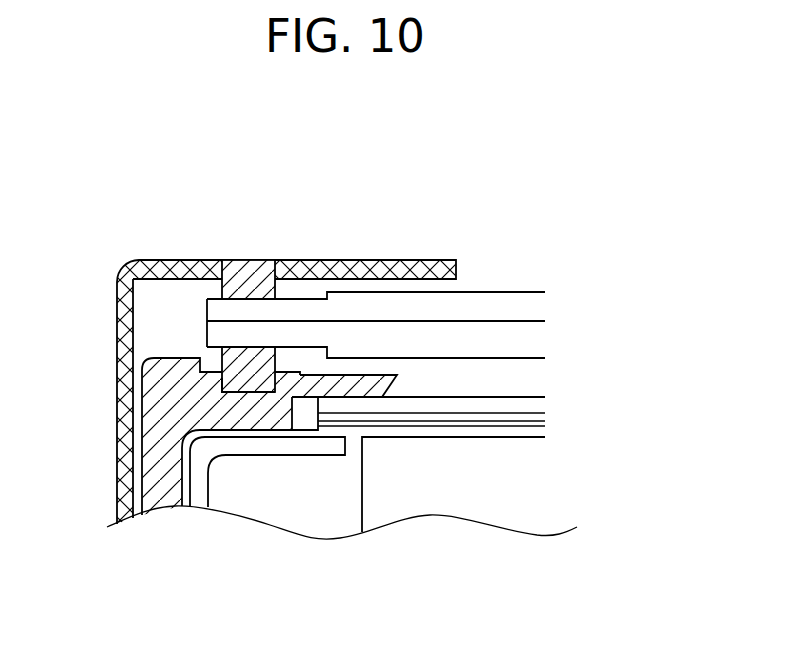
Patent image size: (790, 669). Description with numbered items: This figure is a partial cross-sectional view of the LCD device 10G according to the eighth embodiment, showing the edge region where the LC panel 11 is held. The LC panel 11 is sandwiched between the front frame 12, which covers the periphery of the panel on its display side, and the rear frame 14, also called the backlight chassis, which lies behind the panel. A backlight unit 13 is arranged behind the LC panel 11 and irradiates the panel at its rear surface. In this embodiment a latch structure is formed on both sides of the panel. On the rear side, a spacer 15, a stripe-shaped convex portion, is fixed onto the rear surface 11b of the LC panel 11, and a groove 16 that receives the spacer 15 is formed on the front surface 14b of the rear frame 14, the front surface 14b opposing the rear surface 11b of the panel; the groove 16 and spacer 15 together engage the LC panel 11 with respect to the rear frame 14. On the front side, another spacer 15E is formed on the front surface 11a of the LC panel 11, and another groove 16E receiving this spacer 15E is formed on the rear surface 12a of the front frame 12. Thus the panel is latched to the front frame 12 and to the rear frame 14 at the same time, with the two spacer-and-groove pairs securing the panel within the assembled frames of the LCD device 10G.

The LCD device 10G is at (363, 167).
The LC panel 11 is at (560, 321).
The front surface of the LC panel 11a is at (500, 291).
The rear surface of the LC panel 11b is at (527, 358).
The front frame 12 is at (127, 265).
The rear surface of the front frame 12a is at (393, 261).
The backlight unit 13 is at (491, 496).
The rear frame 14 is at (161, 487).
The front surface of the rear frame 14b is at (375, 378).
The spacer 15 is at (257, 372).
The another spacer 15E is at (246, 259).
The groove 16 is at (222, 388).
The another groove 16E is at (290, 262).